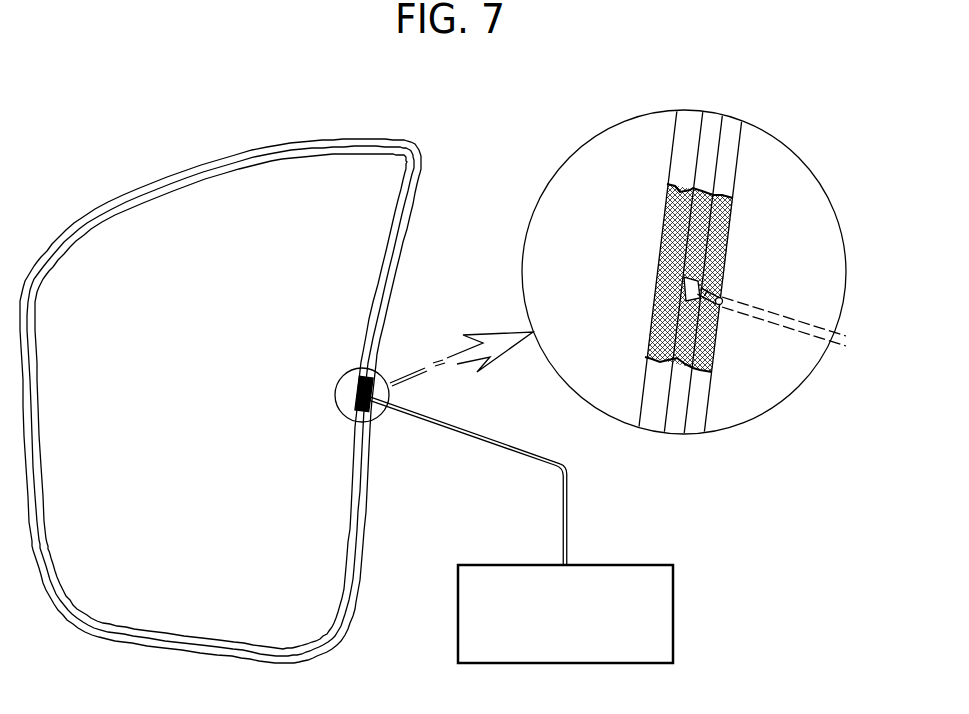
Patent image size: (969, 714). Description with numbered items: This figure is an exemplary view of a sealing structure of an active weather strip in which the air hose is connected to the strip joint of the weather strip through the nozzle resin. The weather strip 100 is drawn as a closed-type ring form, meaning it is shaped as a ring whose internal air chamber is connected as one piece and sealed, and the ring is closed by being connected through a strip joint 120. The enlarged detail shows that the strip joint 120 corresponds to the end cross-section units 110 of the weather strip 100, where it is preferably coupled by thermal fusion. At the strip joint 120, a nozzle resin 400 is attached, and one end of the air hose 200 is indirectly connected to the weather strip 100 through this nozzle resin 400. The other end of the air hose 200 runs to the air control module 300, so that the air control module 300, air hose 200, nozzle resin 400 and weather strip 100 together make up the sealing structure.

The weather strip 100 is at (178, 173).
The end cross-section unit 110 is at (676, 206).
The strip joint 120 is at (713, 254).
The air hose 200 is at (567, 497).
The air control module 300 is at (673, 603).
The nozzle resin 400 is at (683, 288).